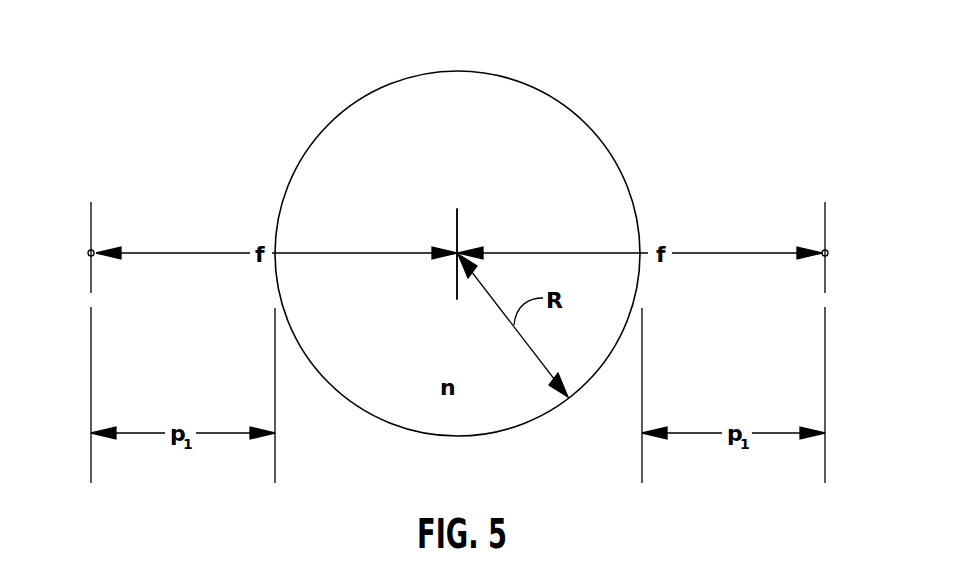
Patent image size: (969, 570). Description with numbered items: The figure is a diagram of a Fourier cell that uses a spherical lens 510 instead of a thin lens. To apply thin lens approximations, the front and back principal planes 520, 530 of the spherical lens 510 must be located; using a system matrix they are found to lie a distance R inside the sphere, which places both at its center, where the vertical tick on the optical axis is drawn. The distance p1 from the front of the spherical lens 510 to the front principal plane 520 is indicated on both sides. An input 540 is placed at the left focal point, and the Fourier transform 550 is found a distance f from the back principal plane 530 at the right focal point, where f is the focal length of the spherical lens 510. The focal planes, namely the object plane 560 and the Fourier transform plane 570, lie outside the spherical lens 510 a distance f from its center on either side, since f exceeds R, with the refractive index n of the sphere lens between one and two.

The spherical lens 510 is at (478, 436).
The front principal plane 520 is at (455, 193).
The back principal plane 530 is at (462, 158).
The input 540 is at (88, 253).
The second focal point 550 is at (822, 253).
The object plane 560 is at (91, 278).
The Fourier transform plane 570 is at (826, 275).